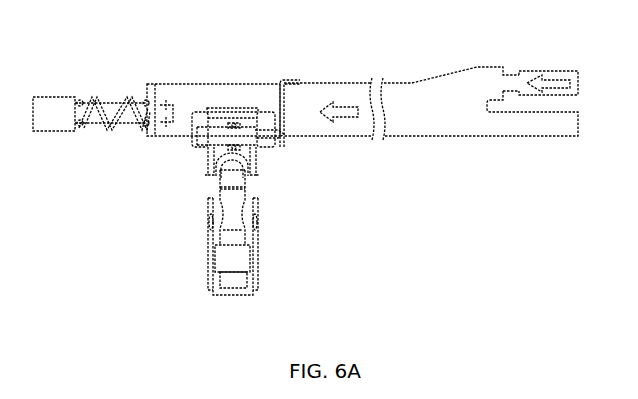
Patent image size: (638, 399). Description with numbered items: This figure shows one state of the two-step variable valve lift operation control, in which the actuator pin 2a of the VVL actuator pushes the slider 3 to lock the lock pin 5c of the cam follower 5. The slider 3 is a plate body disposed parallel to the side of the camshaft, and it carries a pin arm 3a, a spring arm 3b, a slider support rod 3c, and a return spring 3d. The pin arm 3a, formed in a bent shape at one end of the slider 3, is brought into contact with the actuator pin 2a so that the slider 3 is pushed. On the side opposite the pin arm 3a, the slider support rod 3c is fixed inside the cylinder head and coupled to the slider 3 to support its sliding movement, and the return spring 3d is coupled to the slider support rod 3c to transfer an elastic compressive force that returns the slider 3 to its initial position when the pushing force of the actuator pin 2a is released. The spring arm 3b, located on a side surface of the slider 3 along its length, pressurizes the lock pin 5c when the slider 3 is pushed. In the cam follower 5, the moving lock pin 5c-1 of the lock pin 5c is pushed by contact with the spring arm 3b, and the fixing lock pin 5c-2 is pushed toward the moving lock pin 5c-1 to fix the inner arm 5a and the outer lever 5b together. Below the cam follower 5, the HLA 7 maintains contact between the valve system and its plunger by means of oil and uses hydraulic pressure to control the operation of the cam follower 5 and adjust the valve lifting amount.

The actuator pin 2a is at (576, 72).
The slider 3 is at (210, 88).
The pin arm 3a is at (493, 72).
The spring arm 3b is at (275, 100).
The slider support rod 3c is at (49, 102).
The return spring 3d is at (93, 103).
The cam follower 5 is at (179, 155).
The inner arm 5a is at (207, 160).
The outer lever 5b is at (192, 146).
The lock pin 5c is at (323, 164).
The moving lock pin 5c-1 is at (264, 147).
The fixing lock pin 5c-2 is at (283, 138).
The HLA 7 is at (258, 258).